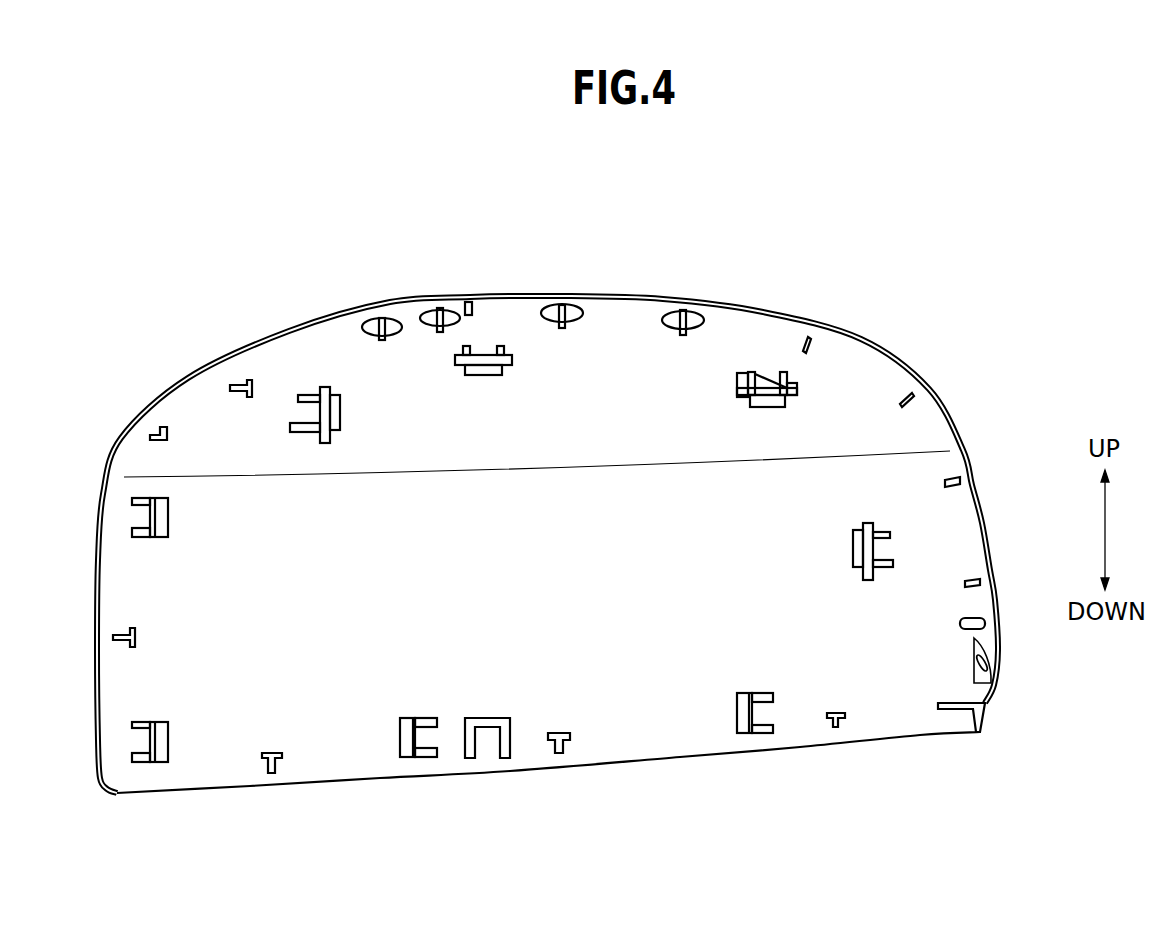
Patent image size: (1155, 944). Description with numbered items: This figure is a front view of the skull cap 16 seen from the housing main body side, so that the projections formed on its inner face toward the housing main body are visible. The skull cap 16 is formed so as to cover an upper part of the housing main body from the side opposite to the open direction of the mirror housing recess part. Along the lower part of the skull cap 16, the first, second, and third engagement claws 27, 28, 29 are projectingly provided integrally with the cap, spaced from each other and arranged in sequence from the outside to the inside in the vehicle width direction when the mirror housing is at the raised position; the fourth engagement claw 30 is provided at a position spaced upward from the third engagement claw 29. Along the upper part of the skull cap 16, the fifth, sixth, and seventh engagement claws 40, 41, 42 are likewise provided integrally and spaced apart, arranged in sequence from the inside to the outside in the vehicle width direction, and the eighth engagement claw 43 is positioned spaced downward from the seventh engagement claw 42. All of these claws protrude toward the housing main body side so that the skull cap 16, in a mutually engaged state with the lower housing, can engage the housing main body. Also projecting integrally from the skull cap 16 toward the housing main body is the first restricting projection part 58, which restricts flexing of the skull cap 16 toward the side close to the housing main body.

The skull cap 16 is at (630, 737).
The first engagement claw 27 is at (742, 702).
The second engagement claw 28 is at (405, 727).
The third engagement claw 29 is at (162, 738).
The fourth engagement claw 30 is at (162, 516).
The fifth engagement claw 40 is at (338, 397).
The sixth engagement claw 41 is at (480, 375).
The seventh engagement claw 42 is at (770, 400).
The eighth engagement claw 43 is at (858, 546).
The first restricting projection part 58 is at (487, 720).